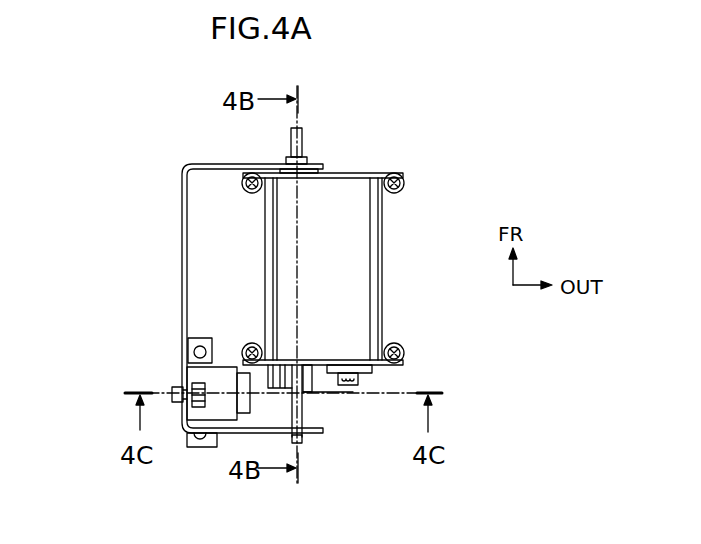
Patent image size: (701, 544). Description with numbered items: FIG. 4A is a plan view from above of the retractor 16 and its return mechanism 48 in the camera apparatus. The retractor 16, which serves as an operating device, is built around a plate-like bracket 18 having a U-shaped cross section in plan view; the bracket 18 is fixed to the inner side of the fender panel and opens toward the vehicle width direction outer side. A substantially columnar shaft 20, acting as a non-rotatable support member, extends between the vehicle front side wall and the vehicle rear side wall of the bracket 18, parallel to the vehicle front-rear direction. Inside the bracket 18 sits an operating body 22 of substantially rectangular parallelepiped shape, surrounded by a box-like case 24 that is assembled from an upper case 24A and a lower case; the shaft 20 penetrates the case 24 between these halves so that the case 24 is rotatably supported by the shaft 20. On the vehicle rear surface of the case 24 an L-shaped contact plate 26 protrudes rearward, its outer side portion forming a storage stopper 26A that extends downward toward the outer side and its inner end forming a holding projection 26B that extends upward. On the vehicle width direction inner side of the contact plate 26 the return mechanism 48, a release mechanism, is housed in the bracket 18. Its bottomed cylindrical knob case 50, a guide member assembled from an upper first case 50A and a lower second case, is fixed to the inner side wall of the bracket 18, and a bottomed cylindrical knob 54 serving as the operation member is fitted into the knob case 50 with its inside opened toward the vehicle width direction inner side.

The retractor 16 is at (165, 150).
The bracket 18 is at (182, 245).
The shaft 20 is at (302, 142).
The operating body 22 is at (388, 234).
The case 24 is at (449, 269).
The upper case 24A is at (383, 325).
The contact plate 26 is at (318, 395).
The storage stopper 26A is at (333, 395).
The holding projection 26B is at (270, 380).
The return mechanism 48 is at (204, 325).
The knob case 50 is at (137, 389).
The first case 50A is at (193, 373).
The knob 54 is at (247, 413).